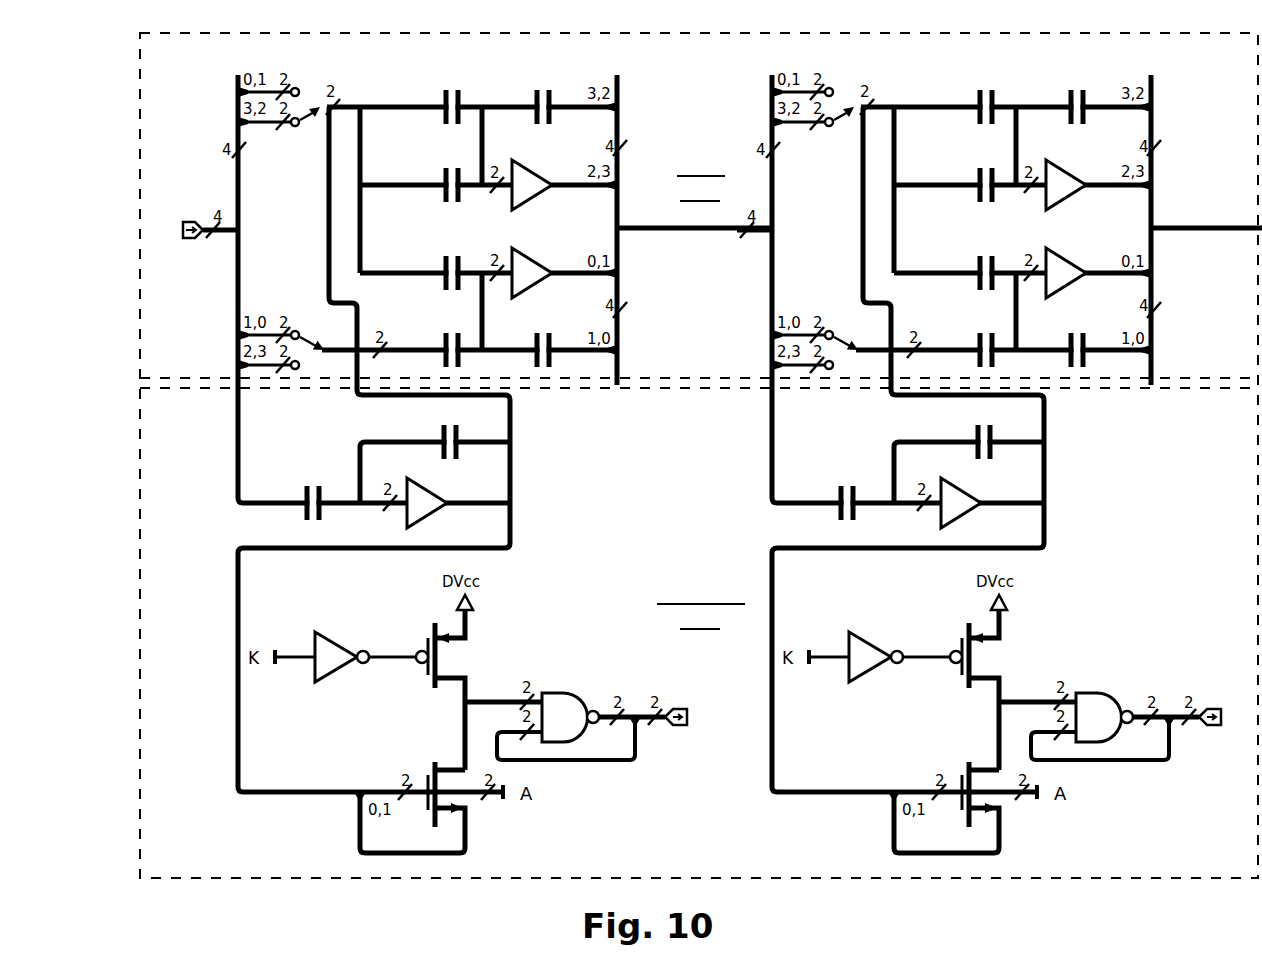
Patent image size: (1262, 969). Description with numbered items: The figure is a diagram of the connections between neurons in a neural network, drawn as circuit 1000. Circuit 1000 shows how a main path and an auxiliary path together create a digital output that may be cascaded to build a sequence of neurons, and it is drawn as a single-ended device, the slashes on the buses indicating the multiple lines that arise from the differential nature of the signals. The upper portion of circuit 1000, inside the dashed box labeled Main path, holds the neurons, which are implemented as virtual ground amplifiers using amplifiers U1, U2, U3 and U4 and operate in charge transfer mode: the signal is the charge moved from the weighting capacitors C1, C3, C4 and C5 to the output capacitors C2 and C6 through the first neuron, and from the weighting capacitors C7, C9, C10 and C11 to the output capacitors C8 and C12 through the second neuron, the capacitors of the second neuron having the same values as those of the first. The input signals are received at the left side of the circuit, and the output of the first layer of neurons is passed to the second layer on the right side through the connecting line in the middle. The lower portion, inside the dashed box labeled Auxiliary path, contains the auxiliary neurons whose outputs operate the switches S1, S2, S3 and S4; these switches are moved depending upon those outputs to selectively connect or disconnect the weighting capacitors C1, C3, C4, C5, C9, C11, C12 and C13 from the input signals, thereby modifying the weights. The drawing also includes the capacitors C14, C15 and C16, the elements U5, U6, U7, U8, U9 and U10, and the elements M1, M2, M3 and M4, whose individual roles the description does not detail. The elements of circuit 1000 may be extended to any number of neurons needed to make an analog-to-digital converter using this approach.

The circuit 1000 is at (718, 470).
The switch S1 is at (298, 124).
The switch S2 is at (300, 332).
The switch S3 is at (832, 124).
The switch S4 is at (834, 332).
The weighting capacitor C1 is at (431, 97).
The output capacitor C2 is at (523, 97).
The weighting capacitor C3 is at (431, 176).
The weighting capacitor C4 is at (431, 264).
The weighting capacitor C5 is at (431, 340).
The output capacitor C6 is at (523, 340).
The weighting capacitor C7 is at (424, 438).
The output capacitor C8 is at (312, 492).
The weighting capacitor C9 is at (965, 97).
The weighting capacitor C10 is at (1053, 97).
The weighting capacitor C11 is at (963, 176).
The capacitor C12 is at (963, 264).
The weighting capacitor C13 is at (963, 340).
The capacitor C14[2] C14 is at (1053, 340).
The capacitor C15[2] C15 is at (954, 438).
The capacitor C16[4] C16 is at (844, 492).
The amplifier U1 is at (532, 179).
The amplifier U2 is at (534, 271).
The amplifier U3 is at (427, 499).
The amplifier U4 is at (342, 661).
The NAND gate U5[2] U5 is at (570, 707).
The buffer U6 is at (1066, 179).
The buffer U7 is at (1068, 271).
The buffer U8 is at (961, 499).
The inverter U9 is at (876, 661).
The NAND gate U10[2] U10 is at (1103, 707).
The PMOS transistor M1[2] M1 is at (413, 655).
The NMOS transistor M2[2] M2 is at (434, 782).
The PMOS transistor M3[2] M3 is at (947, 655).
The NMOS transistor M4[2] M4 is at (968, 782).